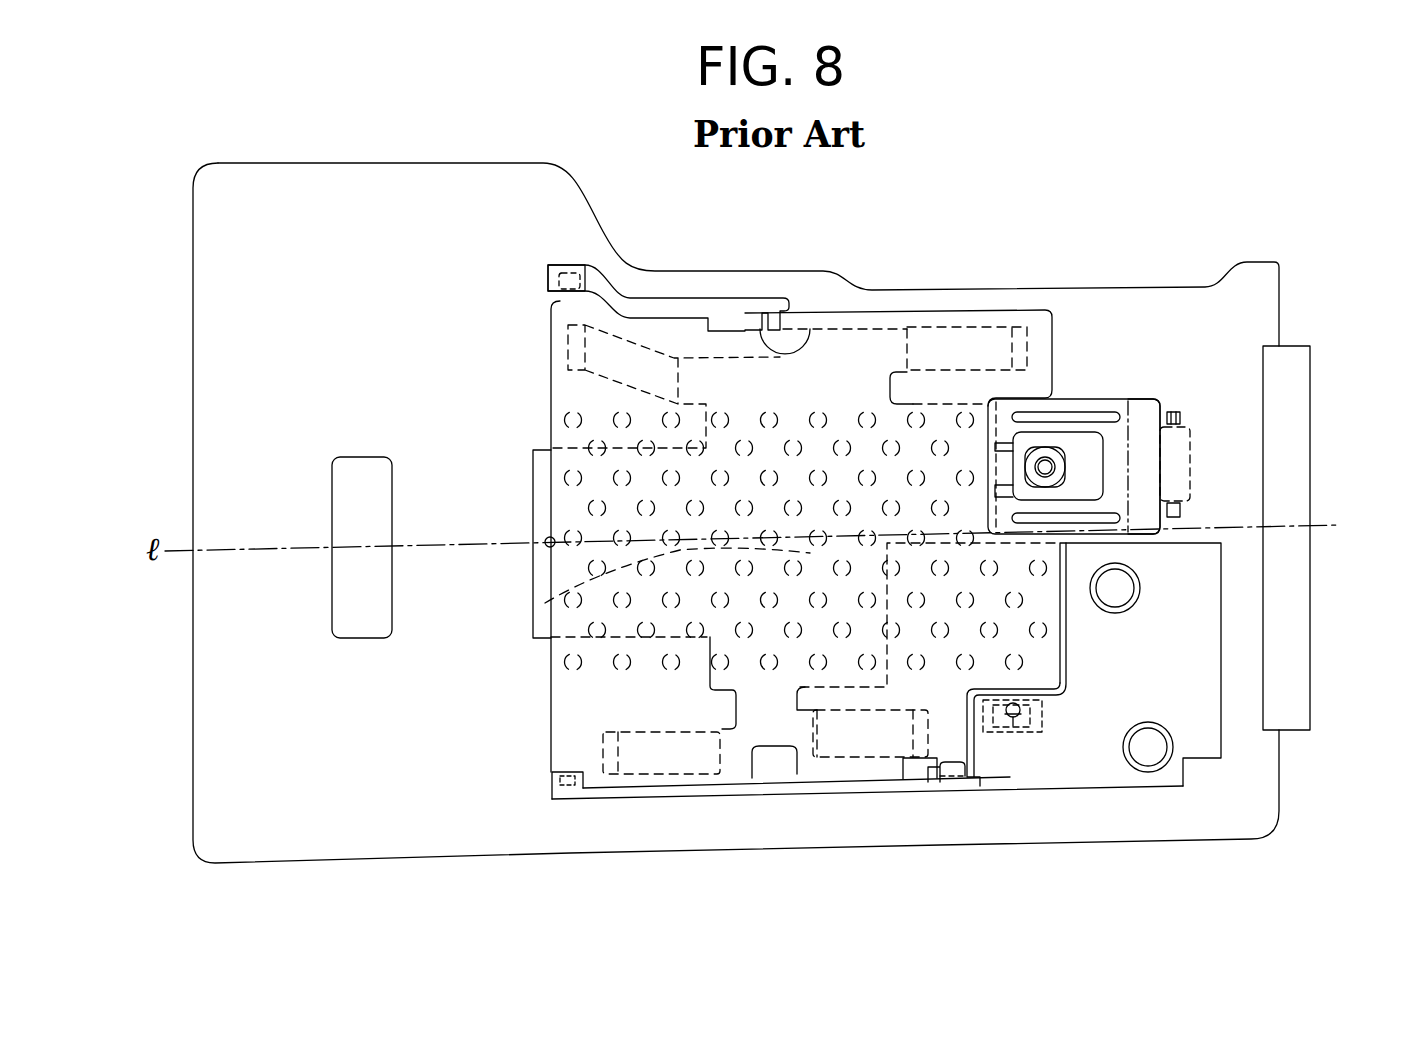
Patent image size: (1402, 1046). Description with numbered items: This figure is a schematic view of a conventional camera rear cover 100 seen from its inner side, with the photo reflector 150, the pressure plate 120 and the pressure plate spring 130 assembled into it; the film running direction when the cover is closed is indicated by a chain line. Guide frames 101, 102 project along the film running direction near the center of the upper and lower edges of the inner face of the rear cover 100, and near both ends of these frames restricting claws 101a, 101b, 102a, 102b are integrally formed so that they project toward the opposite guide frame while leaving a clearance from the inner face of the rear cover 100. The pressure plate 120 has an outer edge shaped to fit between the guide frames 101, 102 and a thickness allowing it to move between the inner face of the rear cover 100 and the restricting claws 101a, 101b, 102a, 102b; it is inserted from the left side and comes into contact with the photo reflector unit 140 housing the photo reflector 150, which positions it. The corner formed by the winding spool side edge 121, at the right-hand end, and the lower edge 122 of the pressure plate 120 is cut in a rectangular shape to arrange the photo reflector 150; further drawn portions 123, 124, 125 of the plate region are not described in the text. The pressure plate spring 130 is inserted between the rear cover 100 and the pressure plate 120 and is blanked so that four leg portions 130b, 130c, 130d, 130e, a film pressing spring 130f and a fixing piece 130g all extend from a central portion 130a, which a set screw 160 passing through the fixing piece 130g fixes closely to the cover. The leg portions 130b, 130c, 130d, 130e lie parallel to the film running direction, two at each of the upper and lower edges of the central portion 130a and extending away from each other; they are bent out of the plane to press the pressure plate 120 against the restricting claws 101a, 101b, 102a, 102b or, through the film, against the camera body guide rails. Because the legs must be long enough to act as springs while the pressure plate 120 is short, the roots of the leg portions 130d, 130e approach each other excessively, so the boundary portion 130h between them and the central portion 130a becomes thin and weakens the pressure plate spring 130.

The rear cover 100 is at (1130, 283).
The guide frame 101 is at (703, 300).
The restricting claw 101a is at (547, 283).
The restricting claw 101b is at (810, 350).
The guide frame 102 is at (787, 800).
The restricting claw 102a is at (552, 783).
The restricting claw 102b is at (927, 775).
The pressure plate 120 is at (1053, 346).
The winding spool side edge 121 is at (1063, 623).
The lower edge 122 is at (883, 773).
The guide portion 123 is at (933, 313).
The frame portion 124 is at (1050, 700).
The mounting block 125 is at (1060, 397).
The pressure plate spring 130 is at (533, 493).
The central portion 130a is at (545, 603).
The leg portion 130b is at (635, 356).
The leg portion 130c is at (977, 327).
The leg portion 130d is at (643, 775).
The leg portion 130e is at (850, 757).
The film pressing spring 130f is at (1147, 398).
The fixing piece 130g is at (1120, 423).
The boundary portion 130h is at (753, 700).
The photo reflector unit 140 is at (1224, 727).
The photo reflector 150 is at (1018, 733).
The set screw 160 is at (1063, 454).